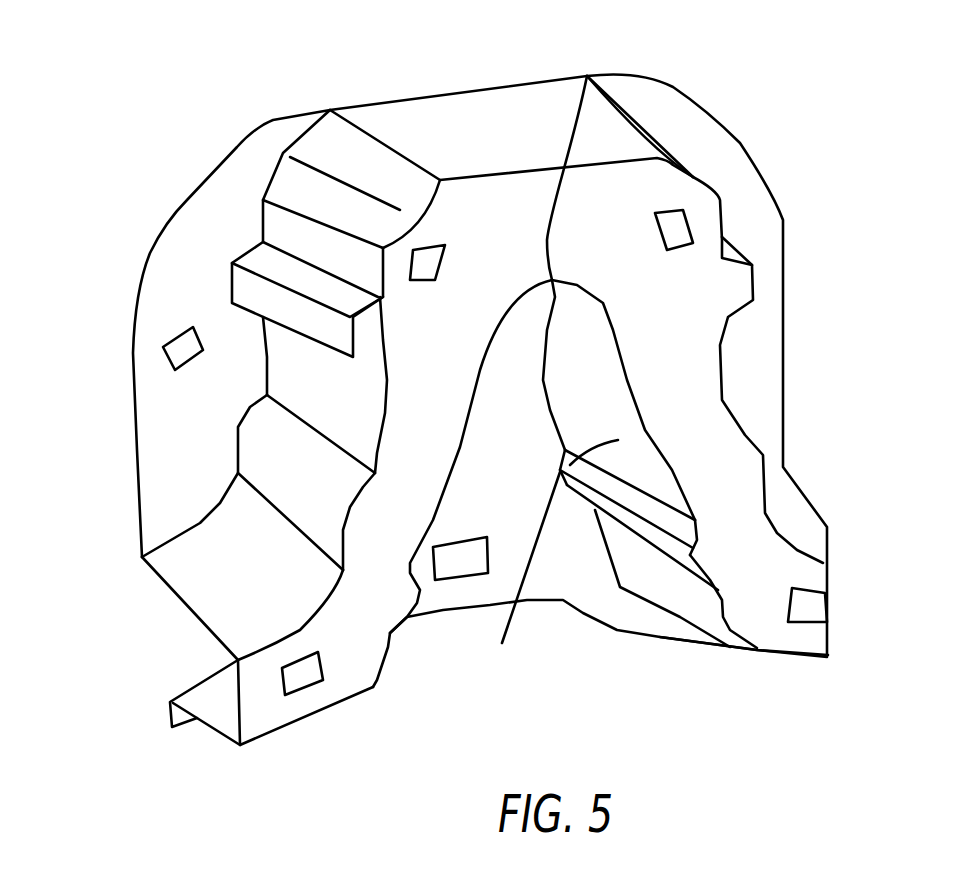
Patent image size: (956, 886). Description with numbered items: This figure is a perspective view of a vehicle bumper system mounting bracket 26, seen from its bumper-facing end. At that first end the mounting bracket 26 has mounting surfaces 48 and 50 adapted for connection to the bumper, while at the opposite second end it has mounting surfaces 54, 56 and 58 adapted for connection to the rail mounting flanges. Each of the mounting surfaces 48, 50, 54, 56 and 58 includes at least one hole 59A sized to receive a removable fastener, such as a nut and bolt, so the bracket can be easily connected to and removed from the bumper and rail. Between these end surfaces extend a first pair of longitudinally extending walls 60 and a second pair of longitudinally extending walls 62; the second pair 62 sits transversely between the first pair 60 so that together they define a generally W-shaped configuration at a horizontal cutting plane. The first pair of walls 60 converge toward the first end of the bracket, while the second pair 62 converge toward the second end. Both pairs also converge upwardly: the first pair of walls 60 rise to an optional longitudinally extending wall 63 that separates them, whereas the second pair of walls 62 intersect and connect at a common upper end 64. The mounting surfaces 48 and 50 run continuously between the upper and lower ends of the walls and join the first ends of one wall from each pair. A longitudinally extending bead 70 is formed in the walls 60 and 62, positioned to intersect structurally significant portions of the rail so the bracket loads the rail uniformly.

The mounting bracket 26 is at (142, 160).
The mounting surface 48 is at (355, 653).
The mounting surface 50 is at (750, 577).
The mounting surface 54 is at (550, 582).
The mounting surface 56 is at (768, 290).
The mounting surface 58 is at (163, 400).
The hole 59A is at (183, 350).
The first pair of longitudinally extending walls 60 is at (253, 547).
The second pair of longitudinally extending walls 62 is at (440, 510).
The longitudinally extending wall 63 is at (438, 128).
The common upper end 64 is at (590, 76).
The longitudinally extending bead 70 is at (255, 298).